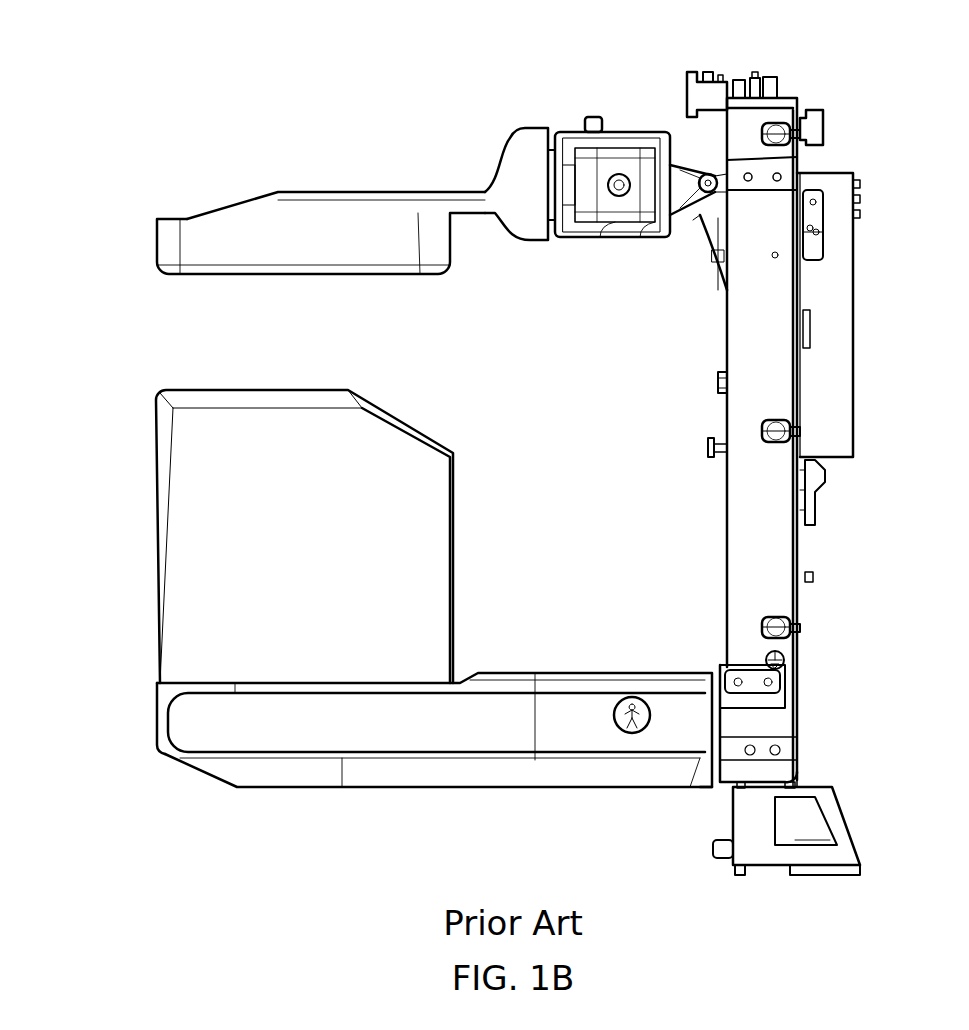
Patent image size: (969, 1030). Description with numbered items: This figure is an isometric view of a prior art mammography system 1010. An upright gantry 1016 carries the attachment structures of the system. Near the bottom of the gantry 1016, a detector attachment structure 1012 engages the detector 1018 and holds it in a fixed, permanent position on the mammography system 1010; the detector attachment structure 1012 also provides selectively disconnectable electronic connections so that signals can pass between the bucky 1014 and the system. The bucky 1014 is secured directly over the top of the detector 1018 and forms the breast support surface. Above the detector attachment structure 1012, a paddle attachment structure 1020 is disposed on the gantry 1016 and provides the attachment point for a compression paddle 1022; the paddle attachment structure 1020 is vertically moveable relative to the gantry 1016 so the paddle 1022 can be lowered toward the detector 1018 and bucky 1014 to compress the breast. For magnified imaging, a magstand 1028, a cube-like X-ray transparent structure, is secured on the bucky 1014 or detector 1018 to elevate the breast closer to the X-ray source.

The mammography system 1010 is at (398, 68).
The detector attachment structure 1012 is at (743, 720).
The bucky 1014 is at (146, 721).
The gantry 1016 is at (775, 387).
The detector 1018 is at (230, 762).
The paddle attachment structure 1020 is at (680, 160).
The compression paddle 1022 is at (190, 243).
The magstand 1028 is at (168, 505).